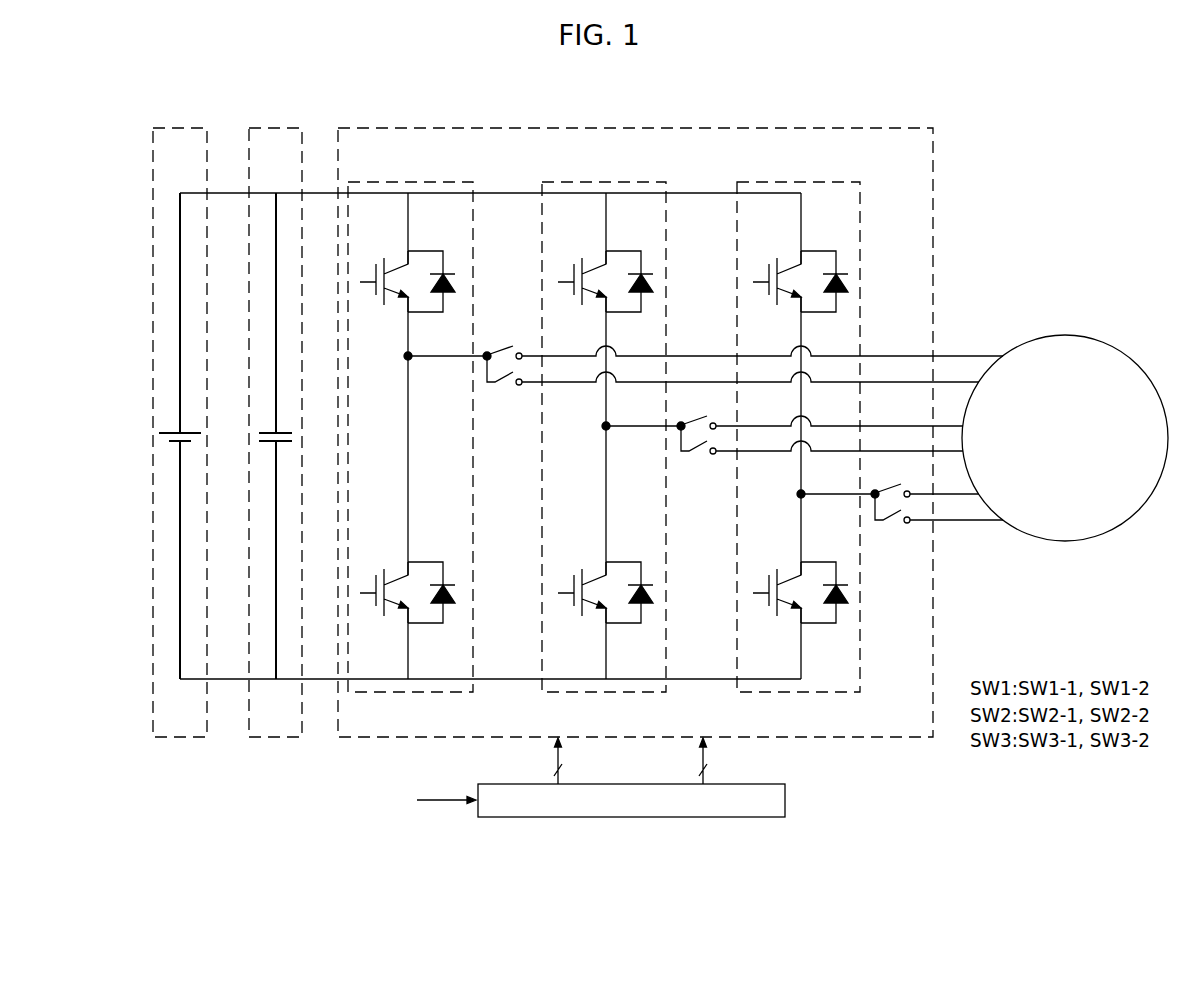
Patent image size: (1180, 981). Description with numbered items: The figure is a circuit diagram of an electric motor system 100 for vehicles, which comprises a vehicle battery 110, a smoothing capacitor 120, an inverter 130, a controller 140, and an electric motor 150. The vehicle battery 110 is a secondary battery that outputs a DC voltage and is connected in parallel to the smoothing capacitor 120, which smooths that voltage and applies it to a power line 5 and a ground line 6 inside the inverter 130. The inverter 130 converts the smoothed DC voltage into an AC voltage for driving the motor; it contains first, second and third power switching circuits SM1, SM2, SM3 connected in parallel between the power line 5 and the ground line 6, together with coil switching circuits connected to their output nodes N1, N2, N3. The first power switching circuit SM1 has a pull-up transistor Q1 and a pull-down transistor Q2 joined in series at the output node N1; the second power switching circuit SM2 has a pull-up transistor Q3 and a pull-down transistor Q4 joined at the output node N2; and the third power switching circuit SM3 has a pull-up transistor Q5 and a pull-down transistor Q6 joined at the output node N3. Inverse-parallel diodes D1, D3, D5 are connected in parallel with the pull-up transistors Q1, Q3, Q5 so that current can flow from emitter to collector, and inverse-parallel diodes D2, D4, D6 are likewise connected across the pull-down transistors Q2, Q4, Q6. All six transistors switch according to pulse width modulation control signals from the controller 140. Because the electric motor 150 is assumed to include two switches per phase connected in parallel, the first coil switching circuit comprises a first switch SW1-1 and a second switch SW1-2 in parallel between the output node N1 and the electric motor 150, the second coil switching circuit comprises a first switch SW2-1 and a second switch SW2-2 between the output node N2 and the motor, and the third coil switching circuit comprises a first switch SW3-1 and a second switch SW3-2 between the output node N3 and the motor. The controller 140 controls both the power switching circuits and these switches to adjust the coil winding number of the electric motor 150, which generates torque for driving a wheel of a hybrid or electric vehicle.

The electric motor system 100 is at (550, 68).
The vehicle battery 110 is at (183, 126).
The smoothing capacitor 120 is at (278, 126).
The inverter 130 is at (635, 127).
The controller 140 is at (786, 800).
The electric motor 150 is at (1065, 334).
The power line 5 is at (314, 192).
The ground line 6 is at (717, 681).
The first power switching circuit SM1 is at (375, 181).
The second power switching circuit SM2 is at (667, 227).
The third power switching circuit SM3 is at (797, 181).
The pull-up transistor Q1 is at (384, 272).
The pull-down transistor Q2 is at (384, 583).
The pull-up transistor Q3 is at (582, 272).
The pull-down transistor Q4 is at (582, 583).
The pull-up transistor Q5 is at (777, 272).
The pull-down transistor Q6 is at (777, 583).
The inverse-parallel diode D1 is at (431, 272).
The inverse-parallel diode D2 is at (431, 583).
The inverse-parallel diode D3 is at (629, 272).
The inverse-parallel diode D4 is at (629, 583).
The inverse-parallel diode D5 is at (824, 272).
The inverse-parallel diode D6 is at (824, 583).
The output node N1 is at (403, 358).
The output node N2 is at (603, 428).
The output node N3 is at (798, 496).
The 1-1st switch SW1-1 is at (742, 340).
The 1-2nd switch SW1-2 is at (730, 384).
The 2-1st switch SW2-1 is at (819, 411).
The 2-2nd switch SW2-2 is at (819, 454).
The 3-1st switch SW3-1 is at (924, 480).
The 3-2nd switch SW3-2 is at (936, 523).